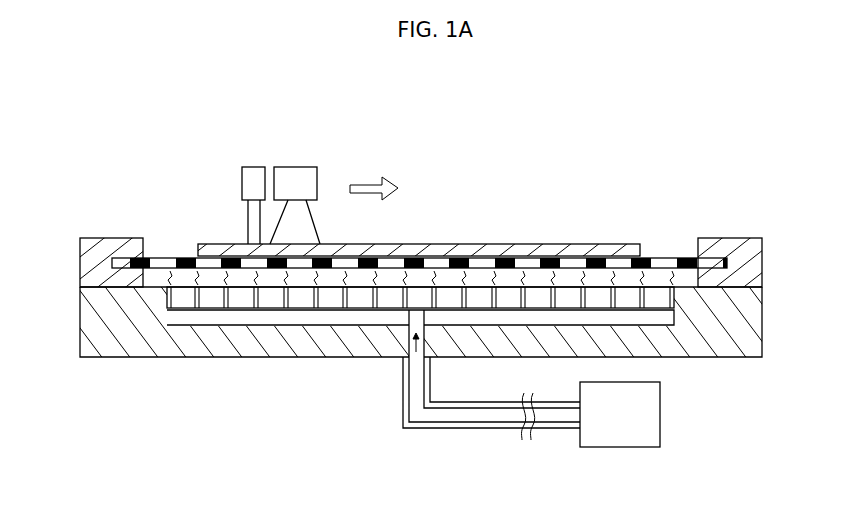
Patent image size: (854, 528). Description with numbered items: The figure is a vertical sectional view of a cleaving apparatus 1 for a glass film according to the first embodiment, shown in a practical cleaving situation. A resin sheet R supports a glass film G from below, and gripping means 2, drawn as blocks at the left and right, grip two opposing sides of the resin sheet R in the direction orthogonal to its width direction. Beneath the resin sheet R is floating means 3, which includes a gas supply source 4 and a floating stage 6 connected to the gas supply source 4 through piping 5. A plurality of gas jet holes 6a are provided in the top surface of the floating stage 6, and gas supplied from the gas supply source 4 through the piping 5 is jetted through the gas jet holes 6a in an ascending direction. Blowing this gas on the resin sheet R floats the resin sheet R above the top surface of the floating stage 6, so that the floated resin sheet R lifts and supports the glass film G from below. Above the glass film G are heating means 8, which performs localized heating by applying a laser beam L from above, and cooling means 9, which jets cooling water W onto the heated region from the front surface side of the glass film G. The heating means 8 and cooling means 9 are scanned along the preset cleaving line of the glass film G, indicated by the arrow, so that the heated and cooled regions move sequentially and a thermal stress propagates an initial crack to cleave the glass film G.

The cleaving apparatus 1 is at (573, 172).
The gripping means 2 is at (100, 240).
The floating means 3 is at (298, 374).
The gas supply source 4 is at (622, 436).
The piping 5 is at (475, 430).
The floating stage 6 is at (752, 315).
The gas jet holes 6a is at (230, 312).
The heating means 8 is at (297, 167).
The cooling means 9 is at (252, 167).
The cooling water W is at (246, 228).
The glass film G is at (487, 244).
The resin sheet R is at (650, 258).
The laser beam L is at (316, 220).